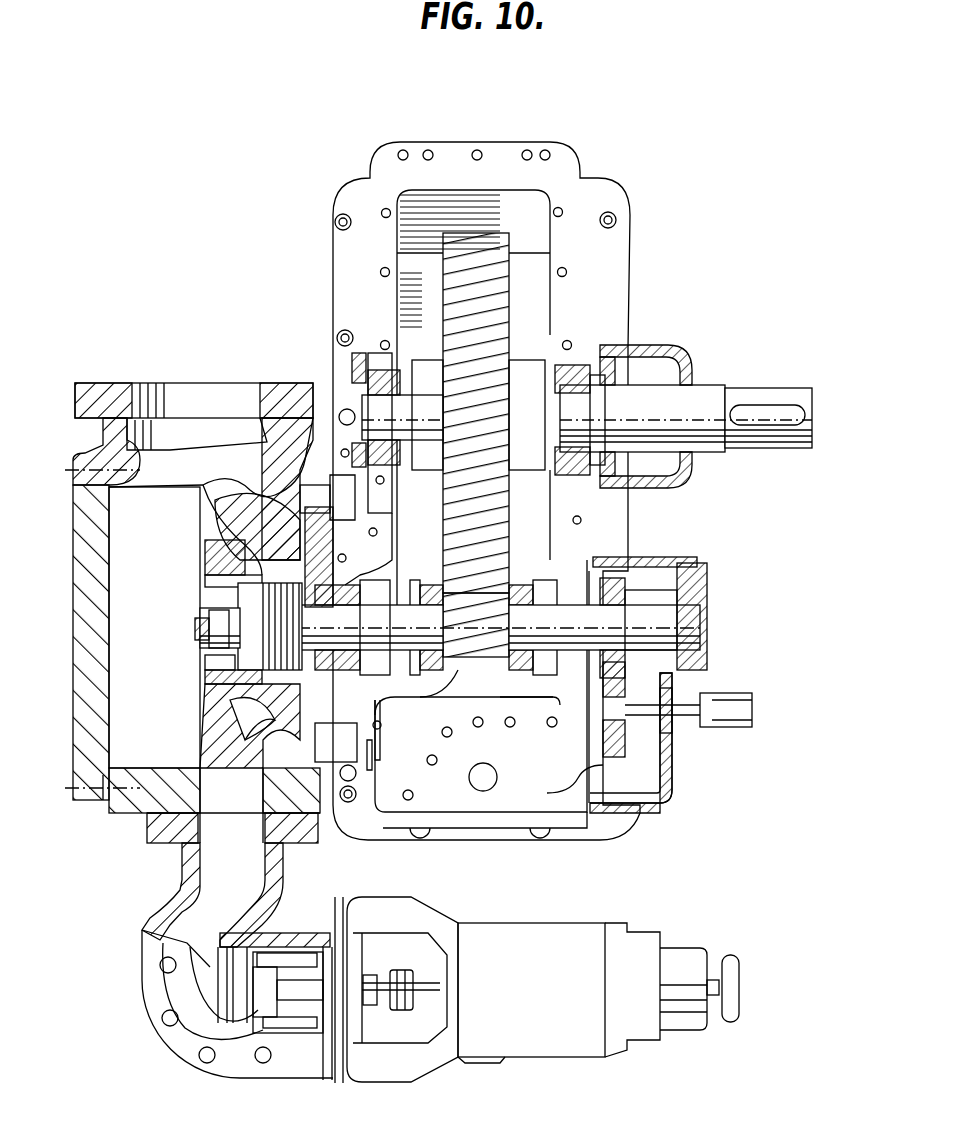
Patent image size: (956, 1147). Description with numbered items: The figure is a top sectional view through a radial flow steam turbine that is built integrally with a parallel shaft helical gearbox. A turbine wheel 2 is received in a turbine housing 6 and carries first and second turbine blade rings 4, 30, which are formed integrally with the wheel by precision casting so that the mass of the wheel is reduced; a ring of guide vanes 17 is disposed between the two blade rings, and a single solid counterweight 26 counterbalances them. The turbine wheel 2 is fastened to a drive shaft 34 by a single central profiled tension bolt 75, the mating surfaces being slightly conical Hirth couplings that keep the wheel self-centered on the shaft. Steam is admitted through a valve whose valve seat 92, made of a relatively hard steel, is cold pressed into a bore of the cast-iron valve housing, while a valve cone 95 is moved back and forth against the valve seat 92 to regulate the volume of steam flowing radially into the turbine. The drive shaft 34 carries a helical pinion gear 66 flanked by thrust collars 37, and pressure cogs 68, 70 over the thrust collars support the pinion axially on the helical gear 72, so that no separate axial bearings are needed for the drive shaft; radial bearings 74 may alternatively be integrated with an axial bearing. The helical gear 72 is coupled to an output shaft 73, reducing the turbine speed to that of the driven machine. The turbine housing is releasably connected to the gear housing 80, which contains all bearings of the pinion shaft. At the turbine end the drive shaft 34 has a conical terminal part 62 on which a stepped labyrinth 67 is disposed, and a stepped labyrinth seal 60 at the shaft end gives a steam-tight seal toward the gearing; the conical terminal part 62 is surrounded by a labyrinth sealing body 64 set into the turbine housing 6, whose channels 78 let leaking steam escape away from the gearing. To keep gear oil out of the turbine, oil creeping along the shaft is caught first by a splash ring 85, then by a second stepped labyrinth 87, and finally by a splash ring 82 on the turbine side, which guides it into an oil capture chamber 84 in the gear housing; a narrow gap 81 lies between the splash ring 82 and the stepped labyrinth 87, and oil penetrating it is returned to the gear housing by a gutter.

The turbine wheel 2 is at (215, 608).
The first turbine blade ring 4 is at (215, 525).
The turbine housing 6 is at (135, 790).
The ring of guide vanes 17 is at (225, 552).
The counterweight 26 is at (265, 500).
The second turbine blade ring 30 is at (210, 582).
The drive shaft 34 is at (538, 633).
The thrust collars 37 is at (490, 592).
The stepped labyrinth seal 60 is at (255, 688).
The conical terminal part 62 is at (232, 670).
The labyrinth sealing body 64 is at (228, 600).
The helical pinion gear 66 is at (492, 658).
The stepped labyrinth 67 is at (232, 650).
The pressure cog 68 is at (440, 668).
The pressure cog 70 is at (525, 665).
The helical gear 72 is at (480, 316).
The output shaft 73 is at (688, 400).
The radial bearings 74 is at (652, 640).
The central profiled tension bolt 75 is at (200, 632).
The channels 78 is at (265, 775).
The gear housing 80 is at (568, 165).
The narrow gap 81 is at (350, 578).
The splash ring 82 is at (333, 700).
The oil capture chamber 84 is at (372, 760).
The splash ring 85 is at (395, 640).
The second stepped labyrinth 87 is at (378, 745).
The valve seat 92 is at (248, 1020).
The valve cone 95 is at (274, 1005).